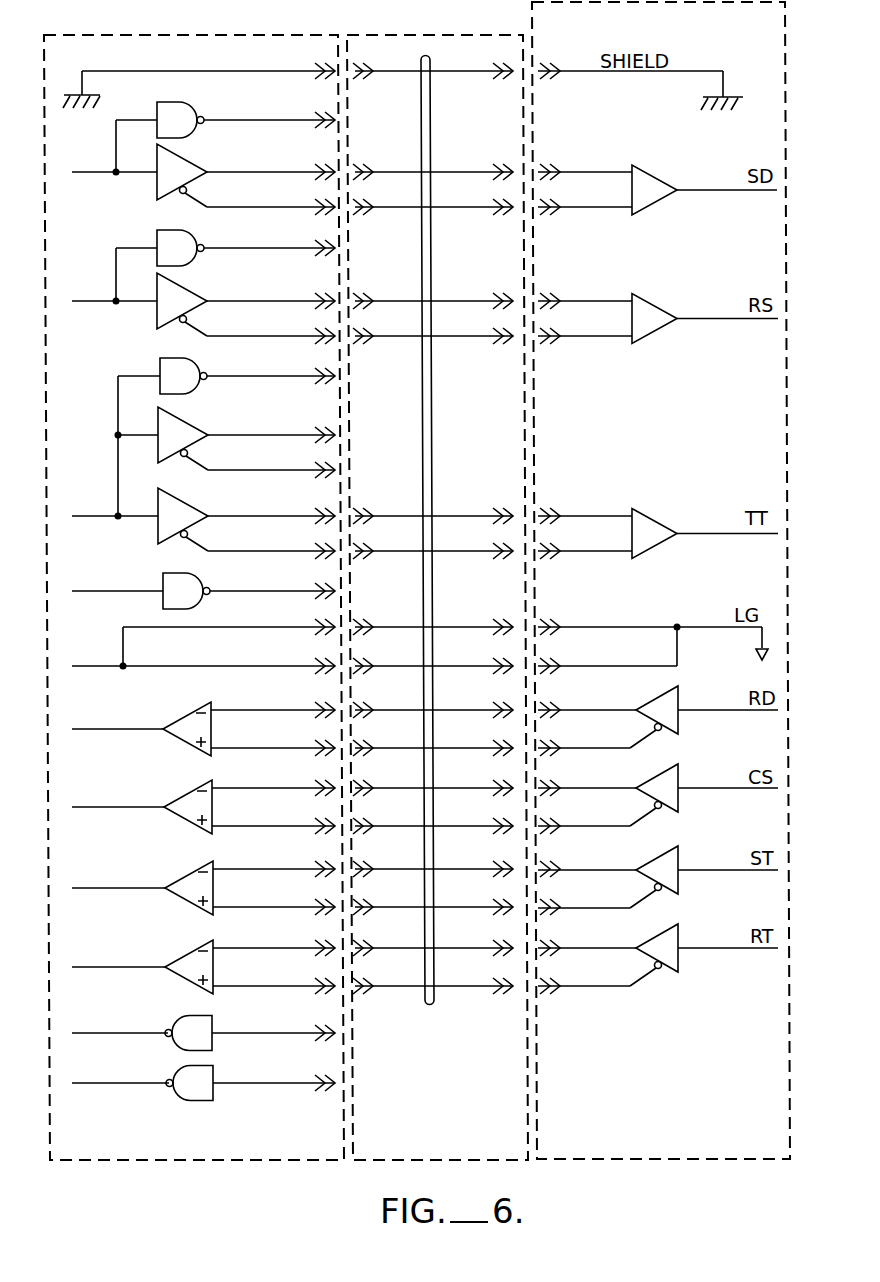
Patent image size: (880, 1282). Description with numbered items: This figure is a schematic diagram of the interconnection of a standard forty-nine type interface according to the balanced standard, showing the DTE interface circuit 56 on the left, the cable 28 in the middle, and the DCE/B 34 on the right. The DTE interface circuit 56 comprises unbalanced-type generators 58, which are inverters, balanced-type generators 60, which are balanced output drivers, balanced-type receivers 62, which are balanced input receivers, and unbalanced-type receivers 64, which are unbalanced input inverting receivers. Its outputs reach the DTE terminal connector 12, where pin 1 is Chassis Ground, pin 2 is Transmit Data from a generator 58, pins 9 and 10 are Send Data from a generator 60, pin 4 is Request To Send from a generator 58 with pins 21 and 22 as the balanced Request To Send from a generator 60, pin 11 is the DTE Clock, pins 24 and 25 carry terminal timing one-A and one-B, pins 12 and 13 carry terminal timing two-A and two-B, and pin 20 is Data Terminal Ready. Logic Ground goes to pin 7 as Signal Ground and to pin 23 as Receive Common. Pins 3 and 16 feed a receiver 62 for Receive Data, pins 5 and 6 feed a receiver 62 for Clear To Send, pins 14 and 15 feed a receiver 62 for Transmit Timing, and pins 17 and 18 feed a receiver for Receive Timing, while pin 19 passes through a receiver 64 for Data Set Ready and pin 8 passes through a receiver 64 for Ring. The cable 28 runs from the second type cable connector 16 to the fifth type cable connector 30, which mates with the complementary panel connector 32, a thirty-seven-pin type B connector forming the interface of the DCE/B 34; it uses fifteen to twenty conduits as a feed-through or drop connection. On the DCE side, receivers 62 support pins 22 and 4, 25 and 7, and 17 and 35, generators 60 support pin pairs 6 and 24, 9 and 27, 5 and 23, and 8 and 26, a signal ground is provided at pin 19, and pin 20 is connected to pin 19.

The DTE interface circuit 56 is at (206, 36).
The DTE terminal connector 12 is at (307, 46).
The second type cable 28 is at (426, 50).
The second type cable connector 16 is at (361, 146).
The fifth type cable connector 30 is at (510, 149).
The panel connector 32 is at (543, 52).
The DCE/B 34 is at (790, 17).
The type RS-232C generator 58 is at (193, 108).
The type RS-422 generator 60 is at (197, 166).
The type RS-422 receiver 62 is at (194, 712).
The type RS-232C receiver 64 is at (206, 1017).
The pin 1 is at (199, 77).
The pin 2 is at (269, 107).
The pin 3 is at (273, 697).
The pin 4 is at (418, 215).
The pin 5 is at (424, 816).
The pin 6 is at (424, 755).
The pin 7 is at (377, 488).
The pin 8 is at (424, 1003).
The pin 9 is at (421, 467).
The pin 10 is at (271, 194).
The pin 11 is at (271, 363).
The pin 13 is at (271, 457).
The pin 14 is at (274, 894).
The pin 15 is at (274, 856).
The pin 17 is at (422, 719).
The pin 18 is at (274, 973).
The pin 19 is at (490, 817).
The pin 20 is at (443, 616).
The pin 21 is at (271, 288).
The pin 22 is at (419, 241).
The pin 23 is at (351, 774).
The pin 24 is at (419, 619).
The pin 25 is at (420, 413).
The pin 26 is at (584, 973).
The pin 27 is at (584, 813).
The pin 35 is at (585, 538).